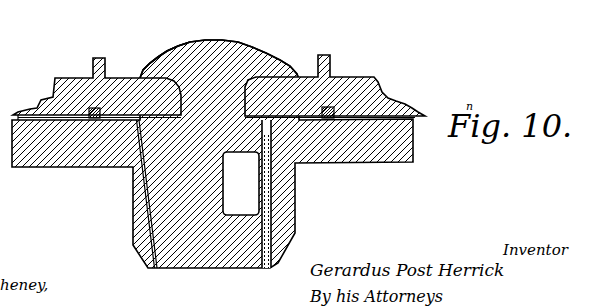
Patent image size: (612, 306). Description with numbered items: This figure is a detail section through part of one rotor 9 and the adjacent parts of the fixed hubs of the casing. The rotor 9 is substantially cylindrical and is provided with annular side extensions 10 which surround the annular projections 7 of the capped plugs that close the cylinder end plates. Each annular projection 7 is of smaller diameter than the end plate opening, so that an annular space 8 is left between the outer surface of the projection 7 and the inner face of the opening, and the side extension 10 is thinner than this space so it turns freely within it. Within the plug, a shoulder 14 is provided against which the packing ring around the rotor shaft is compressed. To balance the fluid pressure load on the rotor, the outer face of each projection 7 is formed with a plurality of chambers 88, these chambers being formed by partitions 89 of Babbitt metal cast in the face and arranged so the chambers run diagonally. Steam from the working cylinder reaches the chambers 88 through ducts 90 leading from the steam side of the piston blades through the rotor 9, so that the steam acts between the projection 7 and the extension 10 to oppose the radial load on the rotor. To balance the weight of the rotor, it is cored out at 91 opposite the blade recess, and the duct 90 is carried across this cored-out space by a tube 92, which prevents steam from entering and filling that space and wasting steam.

The annular projection 7 is at (373, 75).
The annular space 8 is at (363, 120).
The rotor 9 is at (240, 50).
The annular side extension 10 is at (388, 143).
The shoulder 14 is at (90, 60).
The chamber 88 is at (172, 55).
The partition 89 is at (95, 110).
The duct 90 is at (132, 220).
The cored-out portion 91 is at (200, 222).
The tube 92 is at (223, 193).